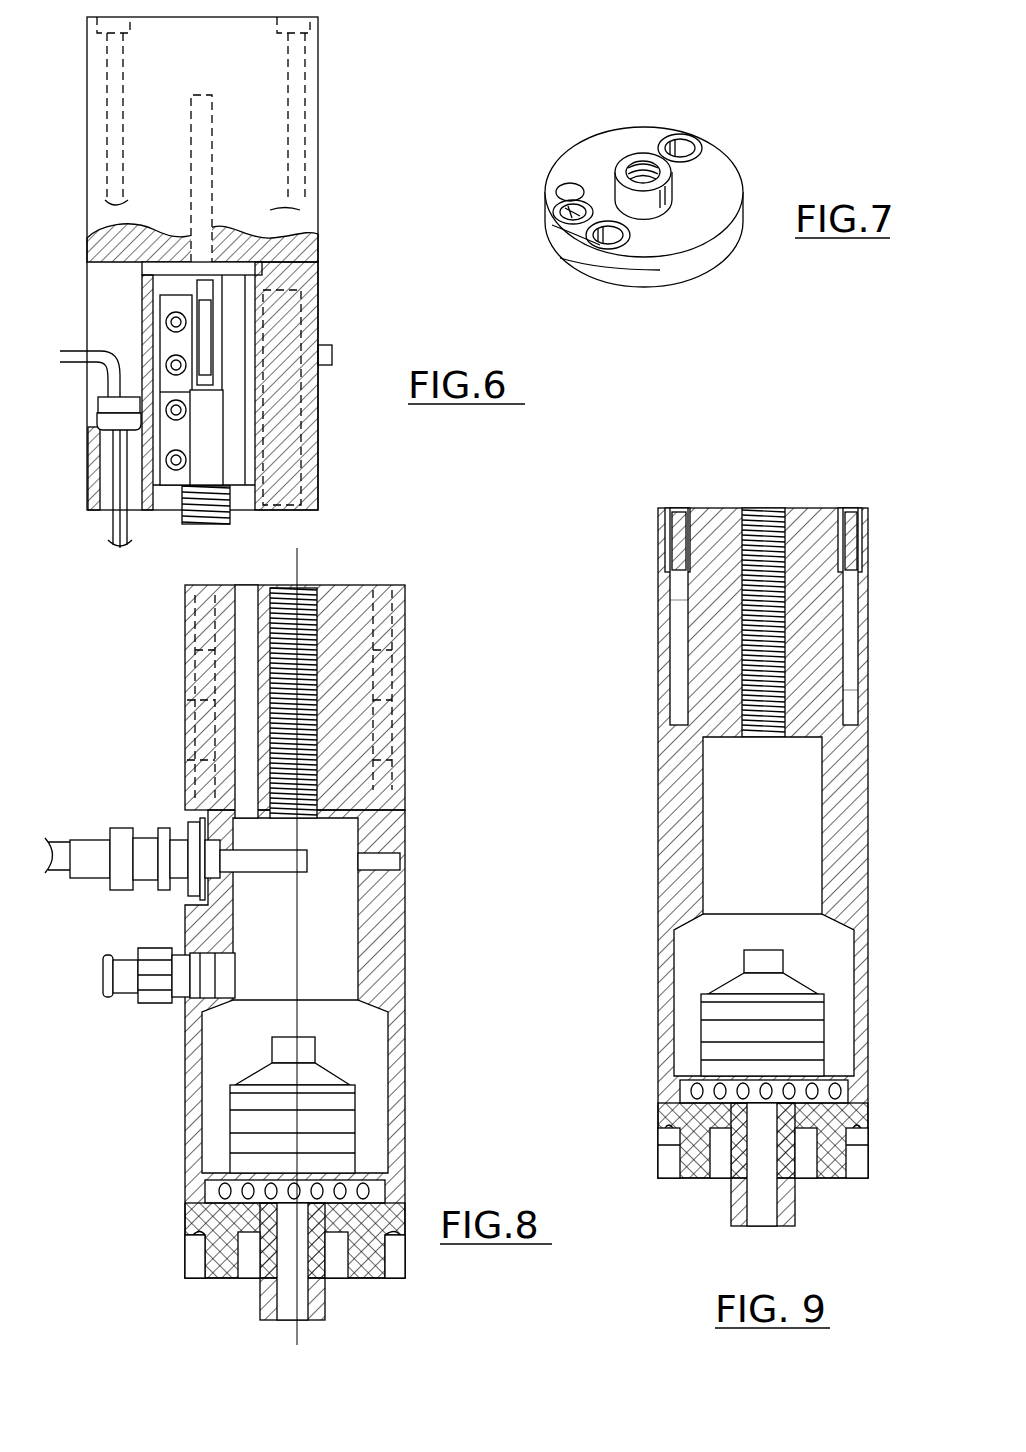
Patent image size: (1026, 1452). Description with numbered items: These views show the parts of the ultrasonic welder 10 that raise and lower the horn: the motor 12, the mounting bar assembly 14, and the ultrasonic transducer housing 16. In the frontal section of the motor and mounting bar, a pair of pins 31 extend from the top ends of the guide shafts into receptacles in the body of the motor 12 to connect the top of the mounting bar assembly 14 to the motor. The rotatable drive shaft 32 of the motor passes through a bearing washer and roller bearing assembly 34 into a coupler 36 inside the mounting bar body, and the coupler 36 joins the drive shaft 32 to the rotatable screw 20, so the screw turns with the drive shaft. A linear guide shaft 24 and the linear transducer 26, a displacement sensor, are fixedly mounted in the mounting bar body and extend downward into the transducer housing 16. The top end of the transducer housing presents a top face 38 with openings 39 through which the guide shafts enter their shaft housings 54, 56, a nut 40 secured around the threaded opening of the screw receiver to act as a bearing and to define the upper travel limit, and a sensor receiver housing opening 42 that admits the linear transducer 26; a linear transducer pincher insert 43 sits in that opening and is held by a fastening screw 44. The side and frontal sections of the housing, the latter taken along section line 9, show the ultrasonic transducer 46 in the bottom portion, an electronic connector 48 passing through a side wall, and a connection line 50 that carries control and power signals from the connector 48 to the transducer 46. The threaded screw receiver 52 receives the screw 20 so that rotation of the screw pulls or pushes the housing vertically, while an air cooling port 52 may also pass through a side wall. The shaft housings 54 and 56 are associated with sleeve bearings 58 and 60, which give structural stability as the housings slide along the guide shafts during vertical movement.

In FIG. 8, the section line 9- 9 is at (300, 565).
In FIG. 6, the welder 10 is at (241, 289).
In FIG. 7, the welder 10 is at (675, 185).
In FIG. 8, the welder 10 is at (268, 950).
In FIG. 9, the welder 10 is at (749, 819).
In FIG. 6, the motor 12 is at (325, 168).
In FIG. 6, the mounting bar assembly 14 is at (323, 320).
In FIG. 7, the ultrasonic transducer housing 16 is at (746, 205).
In FIG. 8, the ultrasonic transducer housing 16 is at (410, 950).
In FIG. 9, the ultrasonic transducer housing 16 is at (872, 865).
In FIG. 6, the screw 20 is at (200, 520).
In FIG. 6, the linear guide shaft 24 is at (320, 452).
In FIG. 6, the linear transducer 26 is at (98, 522).
In FIG. 6, the pins 31 is at (310, 246).
In FIG. 6, the drive shaft 32 is at (210, 132).
In FIG. 6, the bearing washer and roller bearing assembly 34 is at (232, 262).
In FIG. 6, the coupler 36 is at (240, 423).
In FIG. 7, the top face 38 is at (598, 147).
In FIG. 7, the openings 39 is at (690, 138).
In FIG. 7, the nut 40 is at (623, 170).
In FIG. 7, the sensor receiver housing opening 42 is at (555, 210).
In FIG. 7, the linear transducer pincher insert 43 is at (585, 223).
In FIG. 7, the screw 44 is at (568, 184).
In FIG. 8, the ultrasonic transducer 46 is at (348, 1125).
In FIG. 9, the ultrasonic transducer 46 is at (715, 1036).
In FIG. 8, the electronic connector 48 is at (118, 830).
In FIG. 8, the connection line 50 is at (335, 870).
In FIG. 8, the threaded screw receiver 52 is at (305, 760).
In FIG. 9, the threaded screw receiver 52 is at (800, 690).
In FIG. 8, the shaft housing 54 is at (385, 717).
In FIG. 9, the shaft housing 54 is at (680, 655).
In FIG. 8, the shaft housing 56 is at (188, 718).
In FIG. 9, the shaft housing 56 is at (850, 690).
In FIG. 8, the sleeve bearing 58 is at (400, 623).
In FIG. 9, the sleeve bearing 58 is at (858, 560).
In FIG. 8, the sleeve bearing 60 is at (200, 630).
In FIG. 9, the sleeve bearing 60 is at (668, 555).